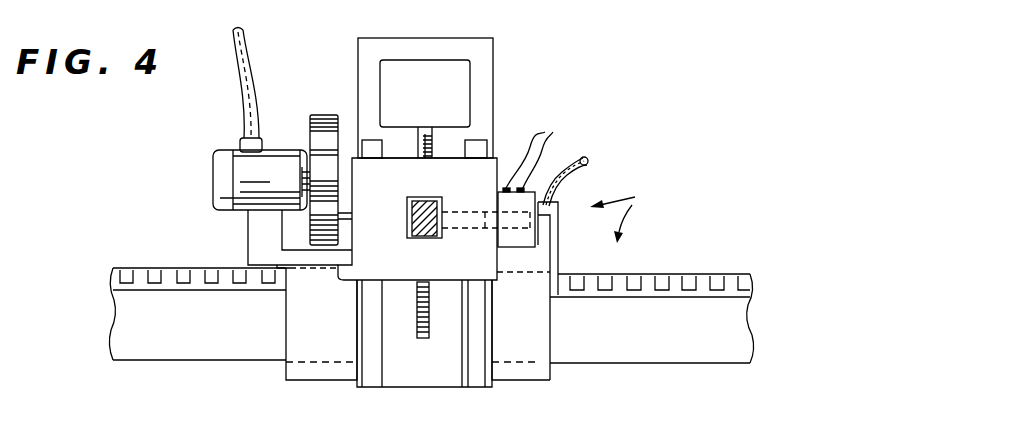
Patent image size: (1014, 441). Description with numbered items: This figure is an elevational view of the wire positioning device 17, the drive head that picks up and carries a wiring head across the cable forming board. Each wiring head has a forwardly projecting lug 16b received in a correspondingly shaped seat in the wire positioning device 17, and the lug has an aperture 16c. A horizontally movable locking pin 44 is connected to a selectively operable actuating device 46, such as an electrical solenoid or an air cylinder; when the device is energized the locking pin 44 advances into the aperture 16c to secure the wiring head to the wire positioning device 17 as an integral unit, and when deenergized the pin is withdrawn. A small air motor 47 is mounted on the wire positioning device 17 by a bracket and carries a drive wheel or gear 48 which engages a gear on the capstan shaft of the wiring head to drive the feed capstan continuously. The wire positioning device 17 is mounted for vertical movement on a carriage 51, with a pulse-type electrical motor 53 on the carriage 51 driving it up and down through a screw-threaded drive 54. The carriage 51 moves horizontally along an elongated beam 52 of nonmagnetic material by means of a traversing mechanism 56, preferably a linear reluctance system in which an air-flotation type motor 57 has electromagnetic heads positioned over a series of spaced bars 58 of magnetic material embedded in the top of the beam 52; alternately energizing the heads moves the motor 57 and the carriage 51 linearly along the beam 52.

The wire positioning device 17 is at (345, 116).
The pulse-type electrical motor 53 is at (438, 72).
The air motor 47 is at (222, 180).
The drive wheel or gear 48 is at (318, 138).
The lug 16b is at (418, 203).
The aperture 16c is at (431, 200).
The locking pin 44 is at (478, 222).
The actuating device 46 is at (527, 237).
The air-flotation type motor 57 is at (566, 203).
The traversing mechanism 56 is at (663, 210).
The carriage 51 is at (458, 370).
The screw-threaded drive 54 is at (417, 318).
The beam 52 is at (625, 352).
The spaced bars of magnetic material 58 is at (186, 274).